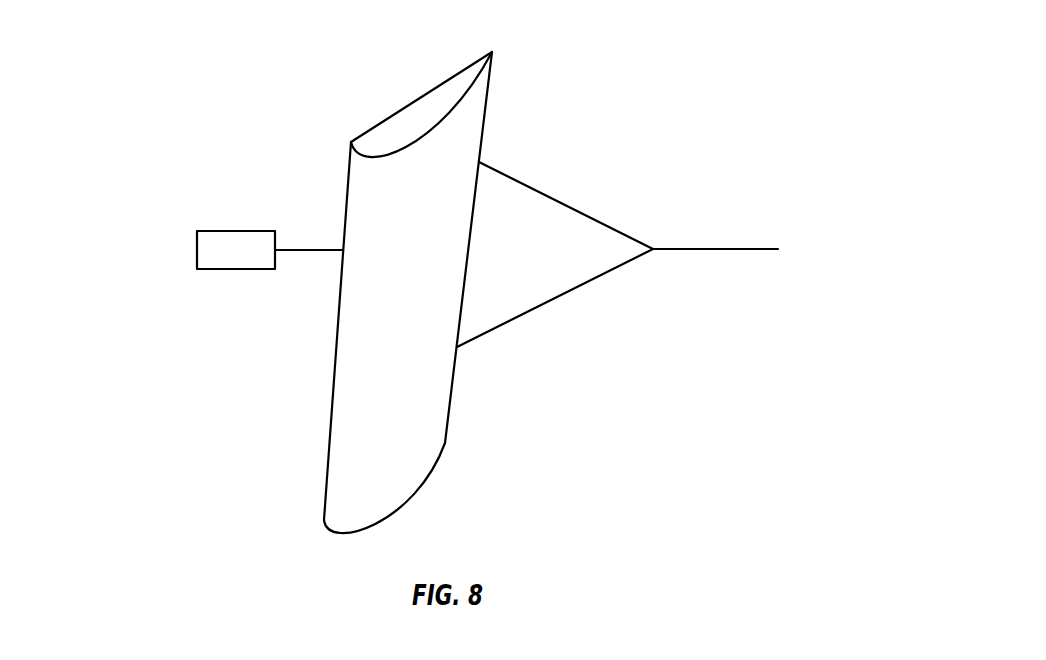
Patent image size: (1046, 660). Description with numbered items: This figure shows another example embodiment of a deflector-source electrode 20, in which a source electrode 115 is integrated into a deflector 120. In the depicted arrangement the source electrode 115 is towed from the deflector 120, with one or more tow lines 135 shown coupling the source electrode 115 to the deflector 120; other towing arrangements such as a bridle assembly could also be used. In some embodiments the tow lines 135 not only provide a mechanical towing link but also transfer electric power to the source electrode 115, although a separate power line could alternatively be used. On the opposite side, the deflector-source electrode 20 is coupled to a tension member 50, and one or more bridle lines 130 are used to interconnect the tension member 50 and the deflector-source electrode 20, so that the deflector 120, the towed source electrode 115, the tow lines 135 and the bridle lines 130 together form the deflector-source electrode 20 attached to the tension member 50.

The deflector-source electrode 20 is at (582, 70).
The deflector 120 is at (375, 192).
The bridle lines 130 is at (573, 210).
The tension member 50 is at (703, 248).
The tow lines 135 is at (302, 247).
The source electrode 115 is at (193, 251).